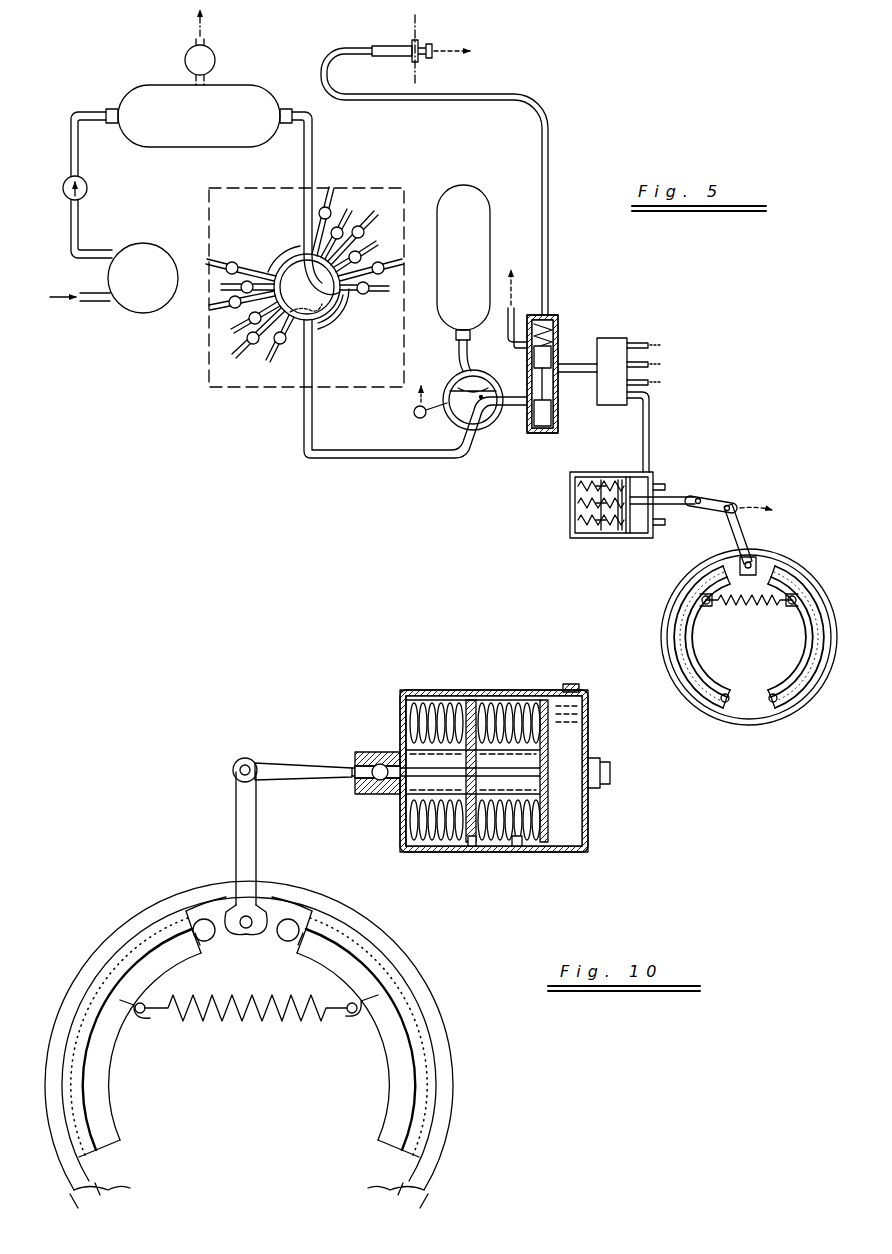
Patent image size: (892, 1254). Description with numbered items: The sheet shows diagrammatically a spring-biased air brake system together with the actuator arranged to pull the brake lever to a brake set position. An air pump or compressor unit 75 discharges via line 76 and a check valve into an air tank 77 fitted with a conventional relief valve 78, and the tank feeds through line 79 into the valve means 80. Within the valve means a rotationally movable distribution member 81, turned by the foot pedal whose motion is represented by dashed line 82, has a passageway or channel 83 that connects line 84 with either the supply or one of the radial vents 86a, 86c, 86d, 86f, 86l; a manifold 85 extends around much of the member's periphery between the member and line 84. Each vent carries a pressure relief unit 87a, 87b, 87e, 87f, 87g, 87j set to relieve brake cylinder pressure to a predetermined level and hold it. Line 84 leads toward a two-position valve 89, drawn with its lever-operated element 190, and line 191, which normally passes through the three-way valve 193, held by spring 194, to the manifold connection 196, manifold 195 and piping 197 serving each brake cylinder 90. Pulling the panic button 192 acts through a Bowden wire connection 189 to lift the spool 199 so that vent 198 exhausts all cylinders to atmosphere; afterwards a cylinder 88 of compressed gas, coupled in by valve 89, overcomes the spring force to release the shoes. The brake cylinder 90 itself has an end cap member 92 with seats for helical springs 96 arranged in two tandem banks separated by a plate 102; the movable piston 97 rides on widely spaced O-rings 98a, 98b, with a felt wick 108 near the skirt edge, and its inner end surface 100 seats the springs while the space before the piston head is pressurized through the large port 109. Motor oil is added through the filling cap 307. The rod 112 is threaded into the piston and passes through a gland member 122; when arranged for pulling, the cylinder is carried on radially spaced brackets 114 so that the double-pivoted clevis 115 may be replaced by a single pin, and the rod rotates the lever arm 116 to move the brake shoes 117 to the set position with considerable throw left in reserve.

In FIG. 5, the air pump or compressor unit 75 is at (114, 278).
In FIG. 5, the line 76 is at (80, 216).
In FIG. 5, the air tank 77 is at (199, 116).
In FIG. 5, the relief valve 78 is at (216, 64).
In FIG. 5, the line 79 is at (313, 134).
In FIG. 5, the valve means 80 is at (404, 188).
In FIG. 5, the rotationally movable distribution member 81 is at (307, 287).
In FIG. 5, the dashed line representing foot pedal movement 82 is at (286, 212).
In FIG. 5, the passageway or channel 83 is at (326, 312).
In FIG. 5, the line 84 is at (312, 420).
In FIG. 5, the manifold 85 is at (316, 322).
In FIG. 5, the vent 86a is at (340, 200).
In FIG. 5, the vent 86c is at (360, 240).
In FIG. 5, the vent 86d is at (380, 254).
In FIG. 5, the vent 86f is at (368, 293).
In FIG. 5, the vent 86l is at (250, 270).
In FIG. 5, the pressure relief unit 87a is at (324, 206).
In FIG. 5, the pressure relief unit 87b is at (358, 225).
In FIG. 5, the pressure relief unit 87e is at (384, 275).
In FIG. 5, the pressure relief unit 87f is at (378, 292).
In FIG. 5, the pressure relief unit 87g is at (282, 344).
In FIG. 5, the pressure relief unit 87j is at (232, 310).
In FIG. 5, the cylinder of compressed gas 88 is at (463, 262).
In FIG. 5, the two-position valve 89 is at (446, 355).
In FIG. 5, the brake cylinder 90 is at (583, 538).
In FIG. 10, the brake cylinder 90 is at (452, 696).
In FIG. 10, the end cap member 92 is at (406, 844).
In FIG. 10, the helical springs 96 is at (406, 742).
In FIG. 5, the movable piston 97 is at (632, 535).
In FIG. 10, the movable piston 97 is at (550, 736).
In FIG. 10, the O-ring 98a is at (522, 846).
In FIG. 10, the O-ring 98b is at (480, 846).
In FIG. 10, the inner end surface of piston / space 100 is at (560, 760).
In FIG. 10, the plate 102 is at (472, 702).
In FIG. 10, the wick 108 is at (472, 850).
In FIG. 10, the port 109 is at (572, 684).
In FIG. 5, the connecting member or rod 112 is at (686, 496).
In FIG. 10, the connecting member or rod 112 is at (296, 764).
In FIG. 10, the brackets 114 is at (364, 752).
In FIG. 5, the double-pivoted clevis 115 is at (720, 498).
In FIG. 5, the lever arm 116 is at (740, 526).
In FIG. 10, the lever arm 116 is at (236, 834).
In FIG. 5, the brake shoes 117 is at (806, 636).
In FIG. 10, the brake shoes 117 is at (322, 946).
In FIG. 10, the removable gland member 122 is at (360, 790).
In FIG. 5, the Bowden wire connection 189 is at (549, 165).
In FIG. 5, the dump valve 190 is at (478, 378).
In FIG. 5, the line 191 is at (522, 410).
In FIG. 5, the panic button 192 is at (425, 40).
In FIG. 5, the three-way valve 193 is at (566, 292).
In FIG. 5, the spring 194 is at (552, 334).
In FIG. 5, the manifold 195 is at (618, 338).
In FIG. 5, the manifold connection 196 is at (580, 378).
In FIG. 5, the piping 197 is at (650, 428).
In FIG. 5, the vent 198 is at (516, 296).
In FIG. 5, the spool 199 is at (540, 420).
In FIG. 10, the filling cap 307 is at (614, 771).